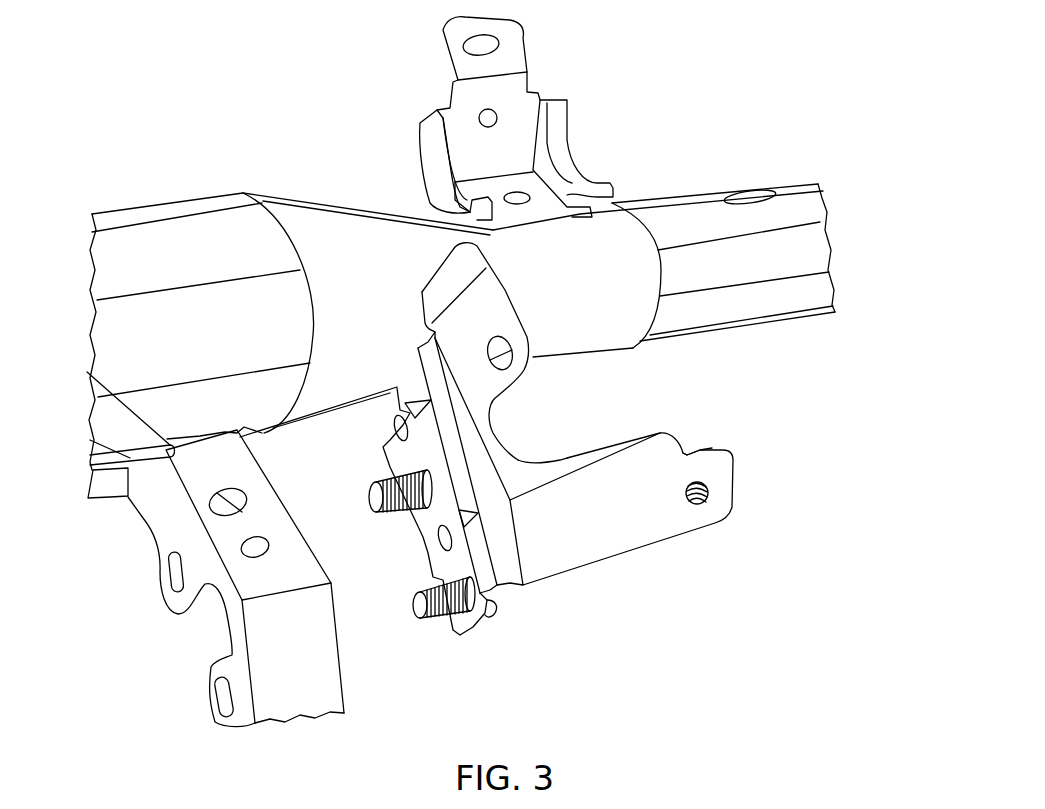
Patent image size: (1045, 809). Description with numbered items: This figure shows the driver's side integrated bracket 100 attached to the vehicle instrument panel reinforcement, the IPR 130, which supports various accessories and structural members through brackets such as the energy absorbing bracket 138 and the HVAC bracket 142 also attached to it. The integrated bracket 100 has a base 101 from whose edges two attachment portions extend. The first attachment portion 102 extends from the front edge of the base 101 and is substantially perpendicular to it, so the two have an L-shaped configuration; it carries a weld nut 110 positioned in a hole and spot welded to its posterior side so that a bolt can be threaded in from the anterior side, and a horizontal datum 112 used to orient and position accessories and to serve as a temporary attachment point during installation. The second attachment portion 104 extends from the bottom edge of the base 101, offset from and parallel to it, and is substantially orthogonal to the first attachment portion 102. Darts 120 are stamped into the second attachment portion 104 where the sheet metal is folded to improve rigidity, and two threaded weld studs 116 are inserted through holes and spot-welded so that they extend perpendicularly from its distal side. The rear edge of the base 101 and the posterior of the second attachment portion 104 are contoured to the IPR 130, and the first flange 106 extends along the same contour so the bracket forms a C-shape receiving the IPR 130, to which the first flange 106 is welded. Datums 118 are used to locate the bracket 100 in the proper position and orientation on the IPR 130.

The integrated bracket 100 is at (704, 689).
The base 101 is at (501, 465).
The first attachment portion 102 is at (621, 548).
The second attachment portion 104 is at (440, 533).
The first flange 106 is at (433, 280).
The weld nut 110 is at (708, 499).
The horizontal datum 112 is at (700, 452).
The threaded weld stud 116 is at (372, 500).
The datums 118 is at (395, 430).
The darts 120 is at (410, 410).
The IPR (instrument panel reinforcement) 130 is at (461, 286).
The energy absorbing bracket 138 is at (207, 685).
The HVAC bracket 142 is at (515, 56).